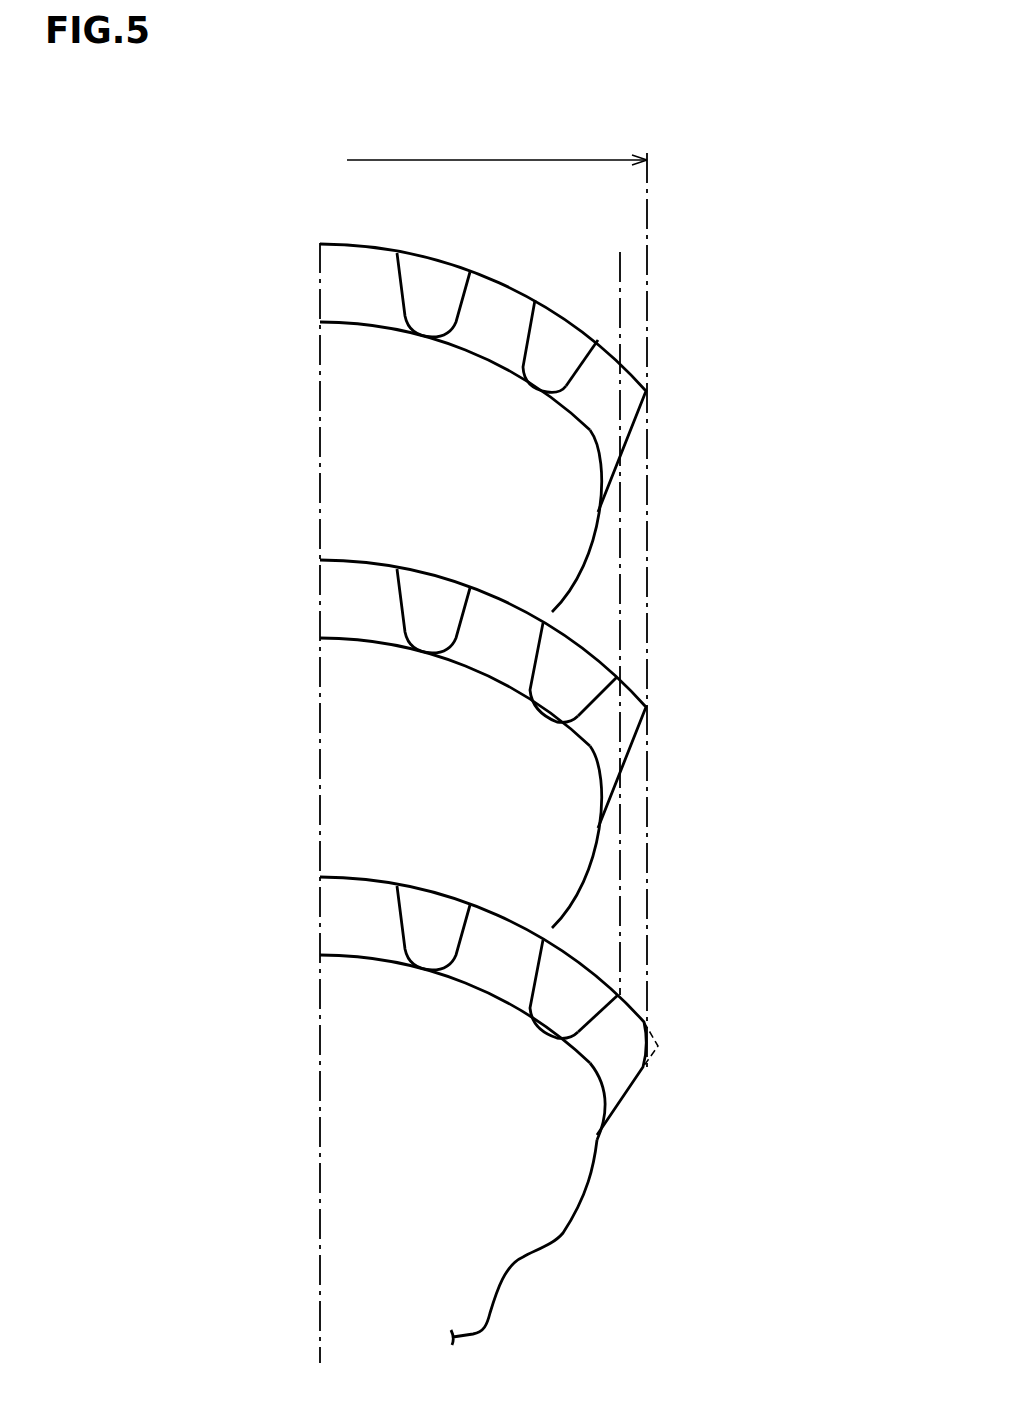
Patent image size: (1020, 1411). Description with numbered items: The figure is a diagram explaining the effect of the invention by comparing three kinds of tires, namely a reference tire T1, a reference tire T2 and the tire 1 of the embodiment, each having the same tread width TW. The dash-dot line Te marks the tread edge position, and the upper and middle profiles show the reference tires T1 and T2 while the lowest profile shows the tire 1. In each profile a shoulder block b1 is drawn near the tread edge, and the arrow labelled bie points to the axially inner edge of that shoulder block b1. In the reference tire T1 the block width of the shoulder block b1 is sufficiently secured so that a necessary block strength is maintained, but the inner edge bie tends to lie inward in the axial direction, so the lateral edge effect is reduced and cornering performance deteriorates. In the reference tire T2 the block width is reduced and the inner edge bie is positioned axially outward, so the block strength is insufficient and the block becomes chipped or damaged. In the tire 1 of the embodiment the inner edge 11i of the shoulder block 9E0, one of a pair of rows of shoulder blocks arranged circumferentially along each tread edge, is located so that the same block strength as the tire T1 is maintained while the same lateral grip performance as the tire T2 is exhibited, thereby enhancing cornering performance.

The tread width TW is at (472, 161).
The tread edge Te is at (647, 457).
The reference tire T1 is at (678, 295).
The reference tire T2 is at (678, 609).
The tire 1 is at (674, 929).
The axially inner edge of the shoulder block bie is at (583, 346).
The shoulder block b1 is at (597, 418).
The inner groove edge (bie) 11i is at (605, 998).
The shoulder blocks 9E0 is at (595, 1052).